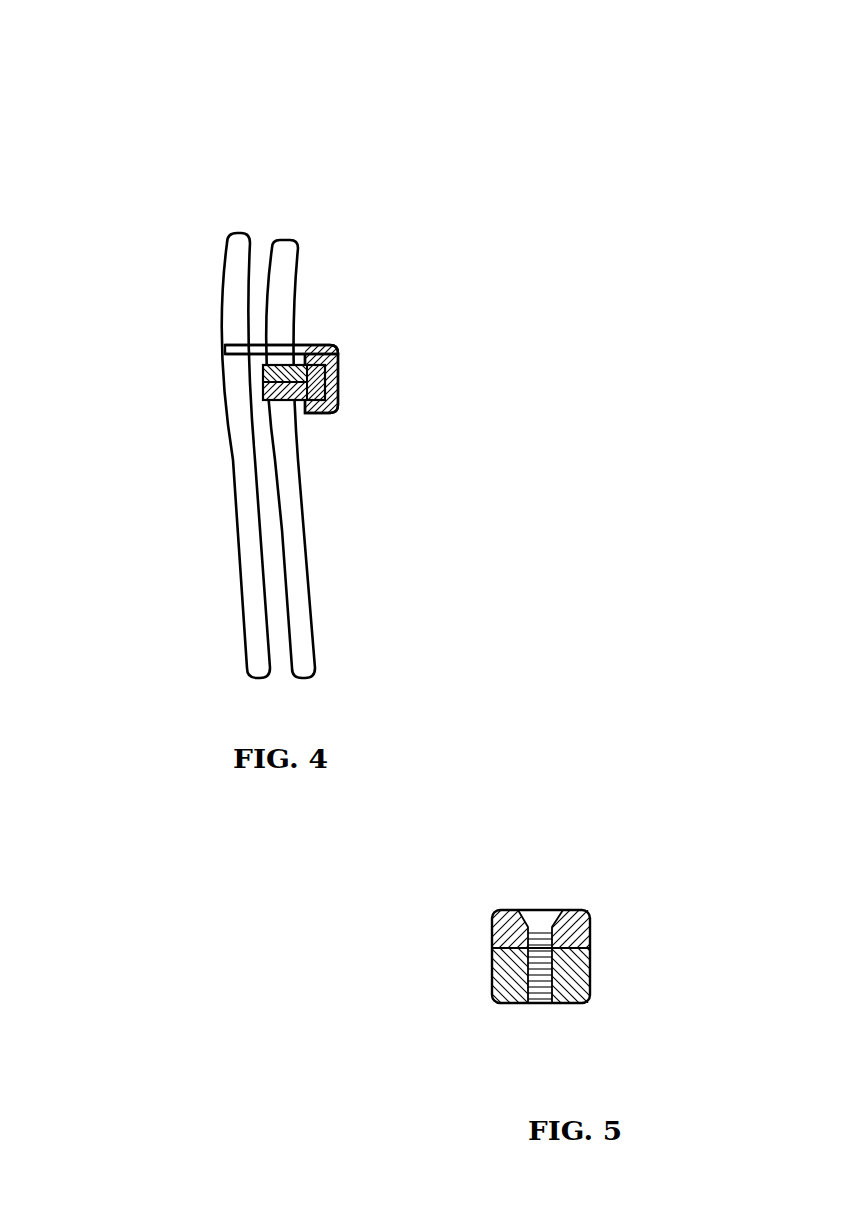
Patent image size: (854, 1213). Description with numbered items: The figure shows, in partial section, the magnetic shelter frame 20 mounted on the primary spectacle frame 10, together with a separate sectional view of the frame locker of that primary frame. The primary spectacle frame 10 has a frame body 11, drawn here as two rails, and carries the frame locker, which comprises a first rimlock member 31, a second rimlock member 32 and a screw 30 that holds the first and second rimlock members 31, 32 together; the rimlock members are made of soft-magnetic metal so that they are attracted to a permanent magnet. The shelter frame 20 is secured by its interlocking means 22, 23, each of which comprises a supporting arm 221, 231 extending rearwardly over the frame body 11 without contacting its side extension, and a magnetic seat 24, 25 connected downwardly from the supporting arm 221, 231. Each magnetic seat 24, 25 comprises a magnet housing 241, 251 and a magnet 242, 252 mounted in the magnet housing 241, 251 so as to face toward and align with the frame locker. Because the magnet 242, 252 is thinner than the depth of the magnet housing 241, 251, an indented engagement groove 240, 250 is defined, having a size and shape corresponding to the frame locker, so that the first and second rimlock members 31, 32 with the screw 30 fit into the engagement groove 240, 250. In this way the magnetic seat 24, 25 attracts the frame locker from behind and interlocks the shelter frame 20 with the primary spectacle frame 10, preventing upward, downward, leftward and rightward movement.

In FIG. 4, the primary spectacle frame 10 is at (390, 466).
In FIG. 4, the frame body 11 is at (308, 558).
In FIG. 4, the magnetic shelter frame 20 is at (390, 415).
In FIG. 4, the interlocking means 22 is at (479, 274).
In FIG. 4, the interlocking means 23 is at (479, 274).
In FIG. 4, the supporting arm 221 is at (432, 182).
In FIG. 4, the supporting arm 231 is at (259, 285).
In FIG. 4, the magnetic seat 24 is at (485, 405).
In FIG. 4, the magnetic seat 25 is at (485, 405).
In FIG. 4, the engagement groove 240 is at (419, 469).
In FIG. 4, the engagement groove 250 is at (310, 420).
In FIG. 4, the magnet housing 241 is at (478, 442).
In FIG. 4, the magnet housing 251 is at (340, 405).
In FIG. 4, the magnet 242 is at (519, 318).
In FIG. 4, the magnet 252 is at (338, 358).
In FIG. 4, the screw 30 is at (236, 436).
In FIG. 5, the screw 30 is at (596, 987).
In FIG. 4, the first rimlock member 31 is at (275, 372).
In FIG. 5, the first rimlock member 31 is at (507, 908).
In FIG. 4, the second rimlock member 32 is at (275, 390).
In FIG. 5, the second rimlock member 32 is at (517, 1005).